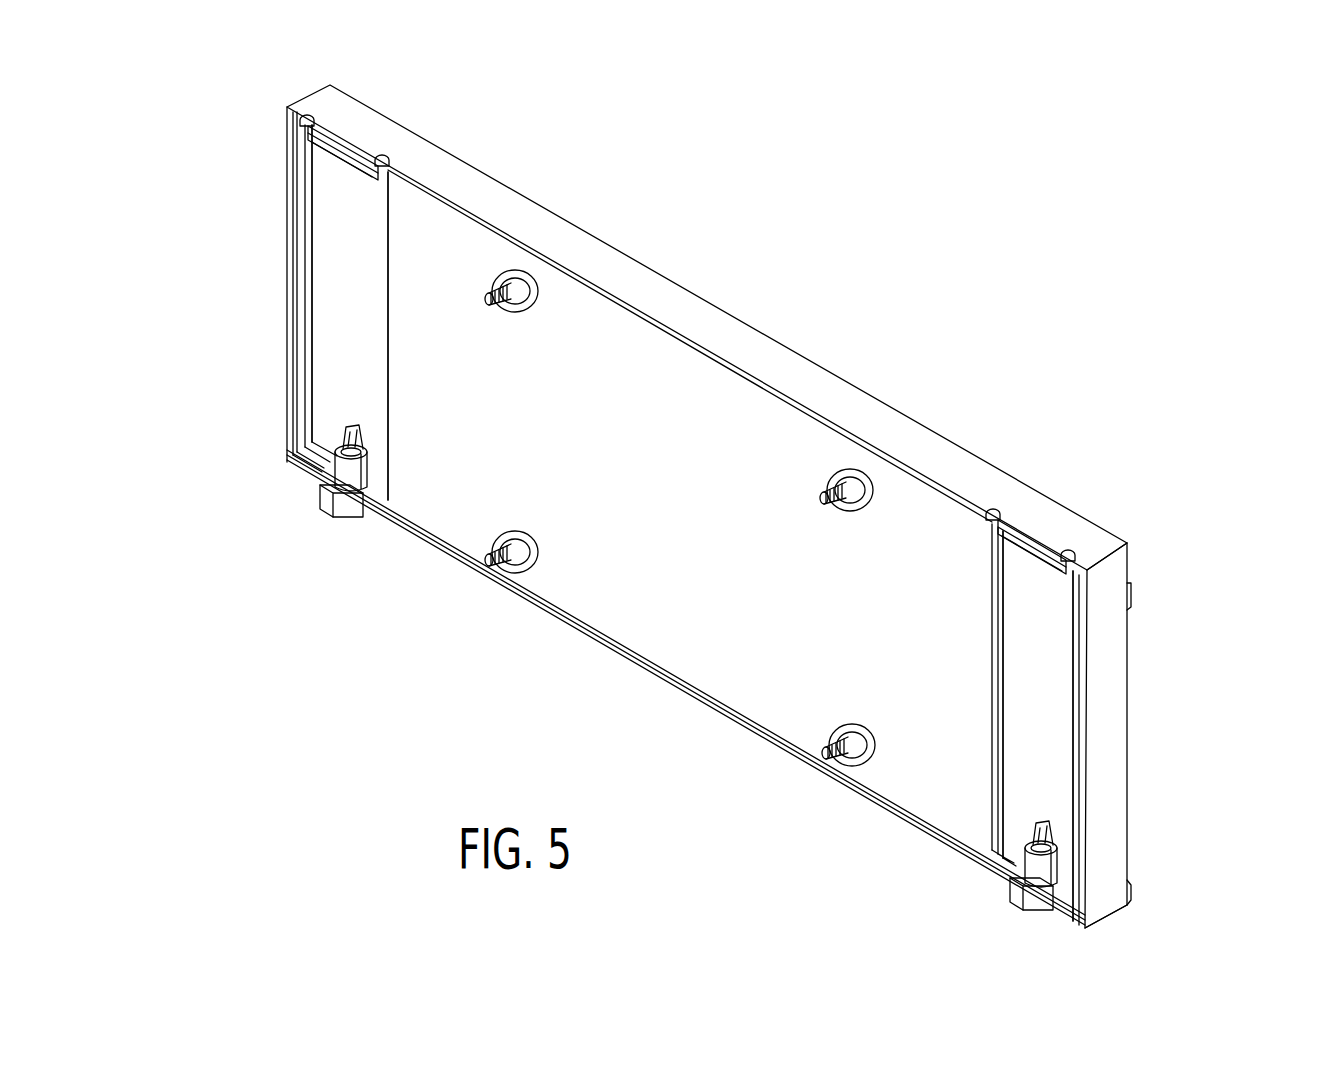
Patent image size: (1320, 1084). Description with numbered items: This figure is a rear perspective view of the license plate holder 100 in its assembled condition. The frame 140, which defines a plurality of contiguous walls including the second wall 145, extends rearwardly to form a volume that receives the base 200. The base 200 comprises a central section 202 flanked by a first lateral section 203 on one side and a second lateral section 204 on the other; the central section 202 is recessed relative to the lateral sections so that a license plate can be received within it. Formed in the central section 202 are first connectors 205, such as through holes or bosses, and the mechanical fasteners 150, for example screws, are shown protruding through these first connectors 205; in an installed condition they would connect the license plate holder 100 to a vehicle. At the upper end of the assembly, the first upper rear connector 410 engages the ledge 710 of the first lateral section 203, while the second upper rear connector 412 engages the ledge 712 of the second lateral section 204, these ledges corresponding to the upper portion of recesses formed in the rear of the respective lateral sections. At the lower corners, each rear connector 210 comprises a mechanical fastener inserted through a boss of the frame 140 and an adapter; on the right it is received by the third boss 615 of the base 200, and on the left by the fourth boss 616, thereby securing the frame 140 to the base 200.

The license plate holder 100 is at (775, 264).
The frame 140 is at (856, 412).
The second wall 145 is at (1105, 841).
The mechanical fasteners 150 is at (498, 566).
The base 200 is at (636, 600).
The central section 202 is at (694, 514).
The first lateral section 203 is at (1040, 696).
The second lateral section 204 is at (357, 288).
The first connectors 205 is at (507, 578).
The rear connector 210 is at (345, 446).
The first upper rear connector 410 is at (1036, 545).
The second upper rear connector 412 is at (305, 150).
The third boss 615 is at (1015, 892).
The fourth boss 616 is at (318, 487).
The ledge 710 is at (1072, 560).
The ledge 712 is at (386, 156).